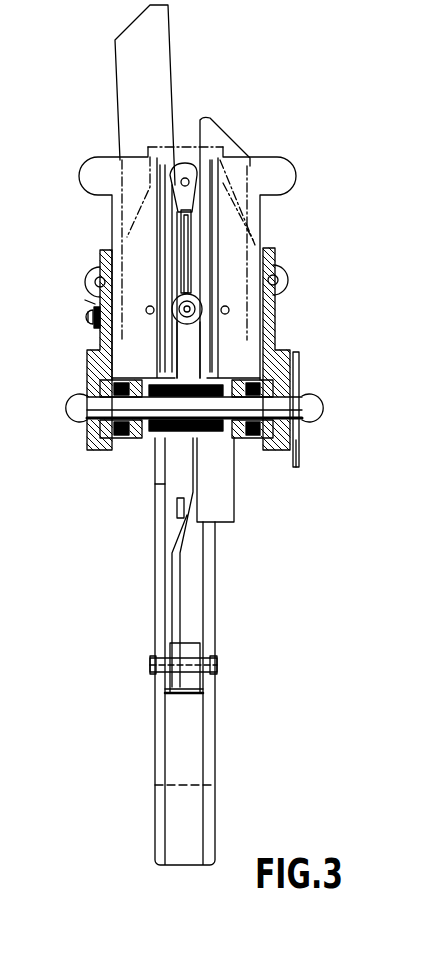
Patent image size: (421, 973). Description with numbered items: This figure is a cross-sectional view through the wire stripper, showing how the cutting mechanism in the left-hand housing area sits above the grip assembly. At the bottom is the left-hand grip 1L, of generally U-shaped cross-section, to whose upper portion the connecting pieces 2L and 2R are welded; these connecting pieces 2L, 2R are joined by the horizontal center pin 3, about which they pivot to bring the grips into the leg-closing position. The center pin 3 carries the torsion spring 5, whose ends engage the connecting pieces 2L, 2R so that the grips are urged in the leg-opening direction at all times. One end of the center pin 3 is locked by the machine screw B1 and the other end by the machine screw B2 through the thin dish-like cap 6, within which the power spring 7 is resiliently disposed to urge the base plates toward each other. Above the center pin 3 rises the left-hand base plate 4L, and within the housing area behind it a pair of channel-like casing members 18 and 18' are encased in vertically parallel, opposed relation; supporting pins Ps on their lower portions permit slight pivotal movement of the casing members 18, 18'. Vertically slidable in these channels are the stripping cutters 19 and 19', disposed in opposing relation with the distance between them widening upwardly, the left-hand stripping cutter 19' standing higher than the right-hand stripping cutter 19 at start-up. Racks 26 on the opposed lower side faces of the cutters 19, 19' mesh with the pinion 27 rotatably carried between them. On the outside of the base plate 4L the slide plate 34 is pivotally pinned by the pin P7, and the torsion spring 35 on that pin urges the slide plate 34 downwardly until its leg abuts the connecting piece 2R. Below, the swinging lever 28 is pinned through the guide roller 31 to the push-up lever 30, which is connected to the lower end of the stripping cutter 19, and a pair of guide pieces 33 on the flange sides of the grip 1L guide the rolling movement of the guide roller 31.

The stripping cutter 19' is at (125, 95).
The stripping cutter 19 is at (242, 244).
The casing member 18 is at (270, 289).
The casing member 18' is at (106, 298).
The base plate 4L is at (240, 242).
The rack 26 is at (157, 235).
The pinion 27 is at (207, 273).
The supporting pin Ps is at (148, 306).
The torsion spring 35 is at (85, 293).
The pin P7 is at (82, 318).
The slide plate 34 is at (95, 325).
The power spring 7 is at (296, 352).
The cap 6 is at (298, 456).
The machine screw B1 is at (66, 409).
The machine screw B2 is at (312, 400).
The center pin 3 is at (86, 418).
The connecting piece 2L is at (118, 441).
The connecting piece 2R is at (135, 438).
The torsion spring 5 is at (153, 440).
The guide piece 33 is at (155, 572).
The push-up lever 30 is at (170, 613).
The grip 1L is at (210, 624).
The swinging lever 28 is at (212, 659).
The guide roller 31 is at (187, 693).